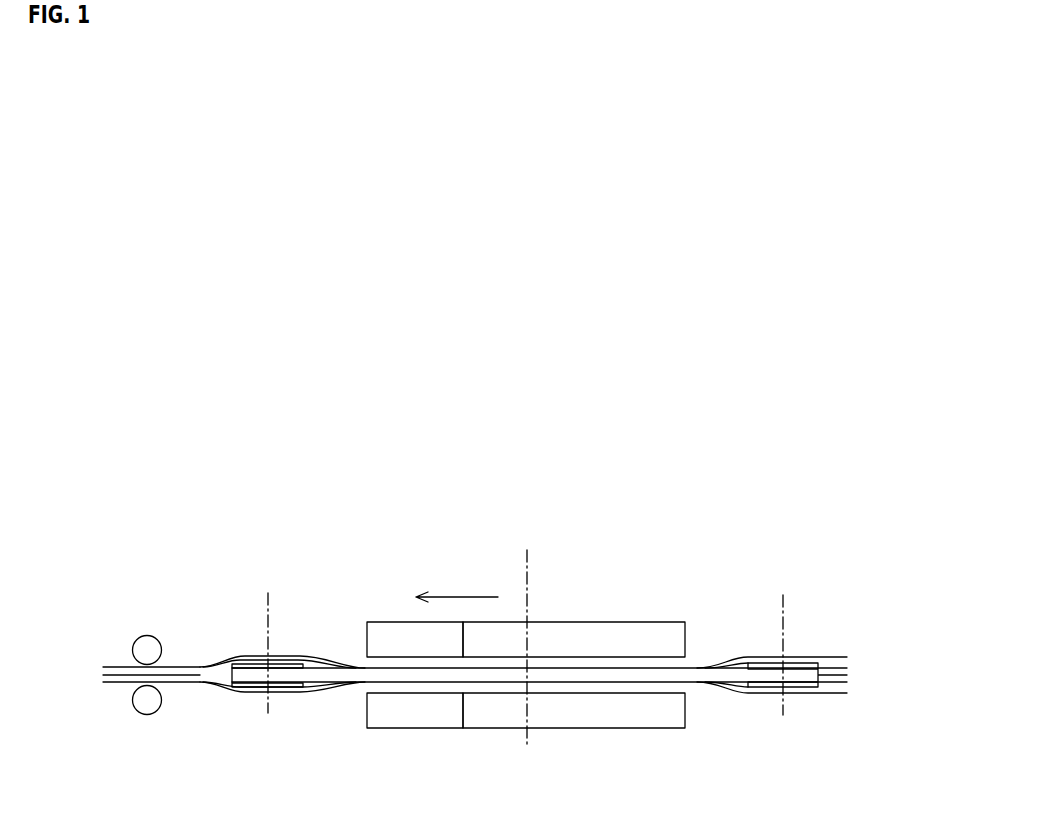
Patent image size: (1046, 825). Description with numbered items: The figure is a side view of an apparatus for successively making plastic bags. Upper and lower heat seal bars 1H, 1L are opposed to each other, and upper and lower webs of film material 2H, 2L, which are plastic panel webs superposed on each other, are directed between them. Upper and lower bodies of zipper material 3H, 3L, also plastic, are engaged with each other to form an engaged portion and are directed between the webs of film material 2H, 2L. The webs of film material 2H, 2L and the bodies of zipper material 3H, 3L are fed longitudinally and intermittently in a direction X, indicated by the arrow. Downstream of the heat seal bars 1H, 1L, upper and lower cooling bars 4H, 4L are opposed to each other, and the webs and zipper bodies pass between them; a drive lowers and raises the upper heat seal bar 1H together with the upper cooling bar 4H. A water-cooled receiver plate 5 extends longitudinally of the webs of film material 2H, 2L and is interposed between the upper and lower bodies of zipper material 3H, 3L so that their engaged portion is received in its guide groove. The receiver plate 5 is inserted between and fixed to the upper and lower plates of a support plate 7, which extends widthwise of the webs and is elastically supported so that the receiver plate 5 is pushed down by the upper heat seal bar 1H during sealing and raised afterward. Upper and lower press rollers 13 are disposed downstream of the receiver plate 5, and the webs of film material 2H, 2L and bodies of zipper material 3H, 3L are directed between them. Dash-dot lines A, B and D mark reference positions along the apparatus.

The upper heat seal bar 1H is at (570, 633).
The lower heat seal bar 1L is at (570, 718).
The upper web of film material 2H is at (232, 655).
The lower web of film material 2L is at (192, 688).
The upper body of zipper material 3H is at (197, 664).
The lower body of zipper material 3L is at (225, 686).
The upper cooling bar 4H is at (379, 628).
The lower cooling bar 4L is at (416, 716).
The receiver plate 5 is at (641, 682).
The support plate 7 is at (293, 688).
The upper and lower press rollers 13 is at (151, 637).
The reference position A is at (783, 598).
The reference position B is at (527, 578).
The reference position D is at (268, 620).
The feed direction X is at (457, 584).